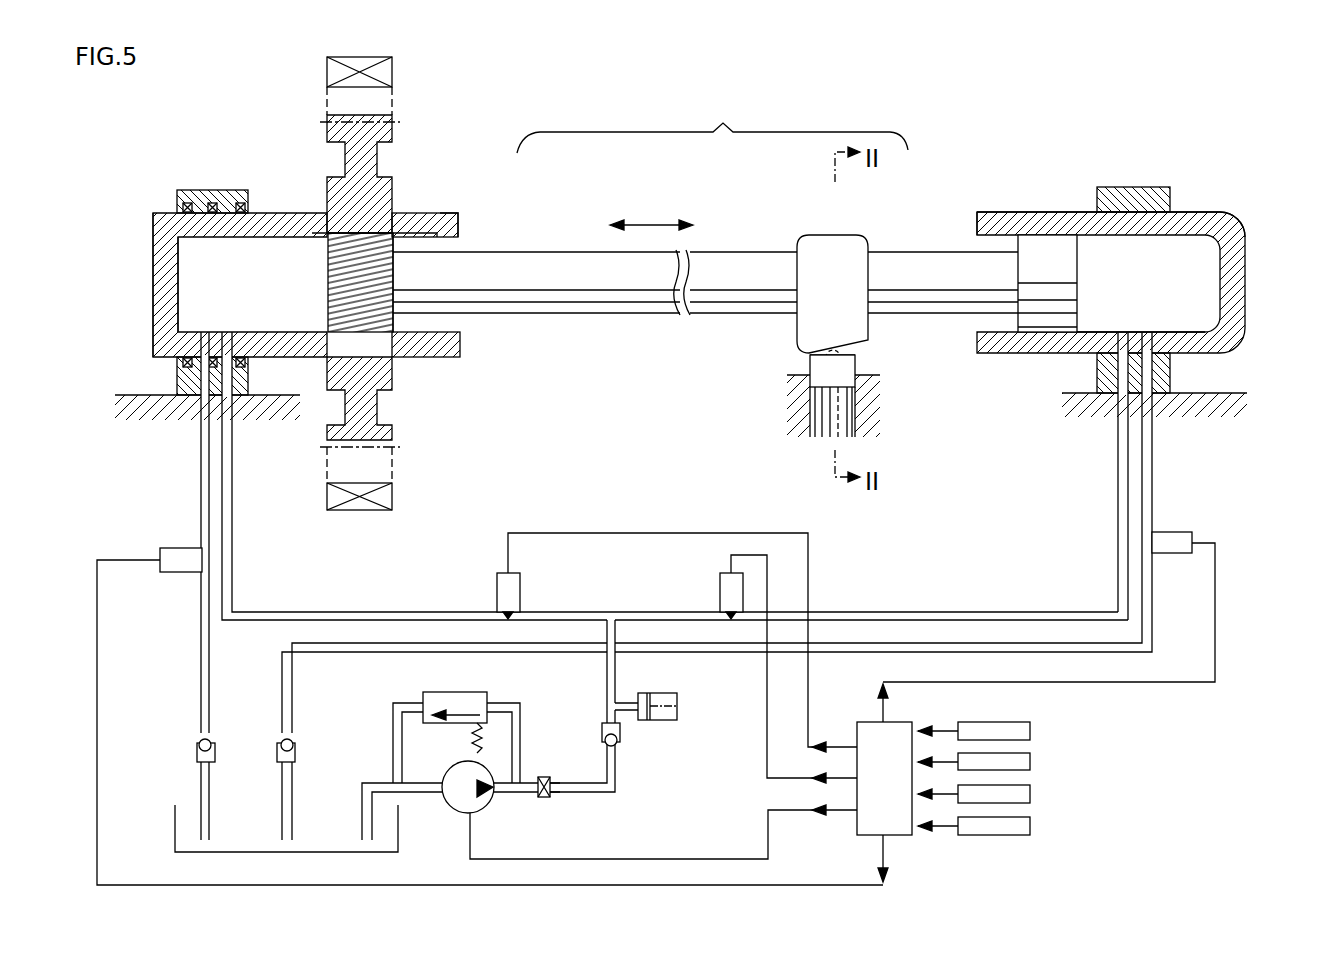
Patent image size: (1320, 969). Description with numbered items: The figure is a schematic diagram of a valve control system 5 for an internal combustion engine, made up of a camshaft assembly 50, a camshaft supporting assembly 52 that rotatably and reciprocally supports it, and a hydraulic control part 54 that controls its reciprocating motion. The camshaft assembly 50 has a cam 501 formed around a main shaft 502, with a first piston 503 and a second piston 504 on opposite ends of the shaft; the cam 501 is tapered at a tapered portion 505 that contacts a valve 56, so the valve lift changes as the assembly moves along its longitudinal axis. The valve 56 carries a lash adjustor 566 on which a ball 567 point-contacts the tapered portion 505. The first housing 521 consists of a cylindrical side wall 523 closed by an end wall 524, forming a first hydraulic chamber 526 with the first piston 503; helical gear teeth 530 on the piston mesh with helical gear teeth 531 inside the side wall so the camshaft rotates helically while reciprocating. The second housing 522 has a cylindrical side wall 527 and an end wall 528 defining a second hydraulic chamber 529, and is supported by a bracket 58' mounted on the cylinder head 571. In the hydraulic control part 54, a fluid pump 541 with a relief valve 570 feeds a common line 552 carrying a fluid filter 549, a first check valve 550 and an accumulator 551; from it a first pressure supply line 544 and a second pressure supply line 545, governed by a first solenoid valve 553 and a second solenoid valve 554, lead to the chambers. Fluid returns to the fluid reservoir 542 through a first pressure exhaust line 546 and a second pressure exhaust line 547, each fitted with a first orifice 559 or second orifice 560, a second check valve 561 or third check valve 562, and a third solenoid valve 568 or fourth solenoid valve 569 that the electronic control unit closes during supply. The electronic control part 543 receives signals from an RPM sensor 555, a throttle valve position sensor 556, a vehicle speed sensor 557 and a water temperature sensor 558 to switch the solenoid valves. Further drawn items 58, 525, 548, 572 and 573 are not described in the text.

The valve control system 5 is at (1262, 206).
The camshaft assembly 50 is at (563, 246).
The camshaft supporting assembly 52 is at (712, 123).
The hydraulic control part 54 is at (990, 558).
The valve 56 is at (850, 400).
The bearing 58 is at (212, 271).
The bracket 58' is at (1133, 269).
The cam 501 is at (830, 238).
The main shaft 502 is at (553, 318).
The first piston 503 is at (330, 298).
The second piston 504 is at (1077, 265).
The tapered portion 505 is at (850, 345).
The first housing 521 is at (468, 200).
The second housing 522 is at (965, 198).
The cylindrical side wall 523 is at (278, 218).
The end wall 524 is at (165, 270).
The pinion shaft 525 is at (380, 135).
The first hydraulic chamber 526 is at (185, 305).
The cylindrical side wall 527 is at (1055, 212).
The end wall 528 is at (1240, 290).
The second hydraulic chamber 529 is at (1210, 320).
The helical gear teeth 530 is at (395, 268).
The helical gear teeth 531 is at (322, 230).
The fluid pump 541 is at (452, 808).
The fluid reservoir 542 is at (295, 852).
The electronic control part 543 is at (935, 855).
The first pressure supply line 544 is at (232, 598).
The second pressure supply line 545 is at (1118, 597).
The first pressure exhaust line 546 is at (201, 603).
The second pressure exhaust line 547 is at (1152, 620).
The pressure line 548 is at (615, 790).
The fluid filter 549 is at (544, 800).
The first check valve 550 is at (630, 748).
The accumulator 551 is at (677, 710).
The common line 552 is at (575, 783).
The first solenoid valve 553 is at (497, 592).
The second solenoid valve 554 is at (720, 592).
The RPM sensor 555 is at (1030, 732).
The throttle valve position sensor 556 is at (1030, 764).
The vehicle speed sensor 557 is at (1030, 796).
The water temperature sensor 558 is at (1030, 827).
The first orifice 559 is at (186, 740).
The second orifice 560 is at (305, 740).
The second check valve 561 is at (185, 768).
The third check valve 562 is at (305, 765).
The lash adjustor 566 is at (810, 368).
The ball 567 is at (826, 350).
The third solenoid valve 568 is at (185, 548).
The fourth solenoid valve 569 is at (1172, 532).
The relief valve 570 is at (502, 694).
The cylinder head 571 is at (136, 420).
The pinion shaft lower end 572 is at (395, 447).
The bearing 573 is at (395, 500).